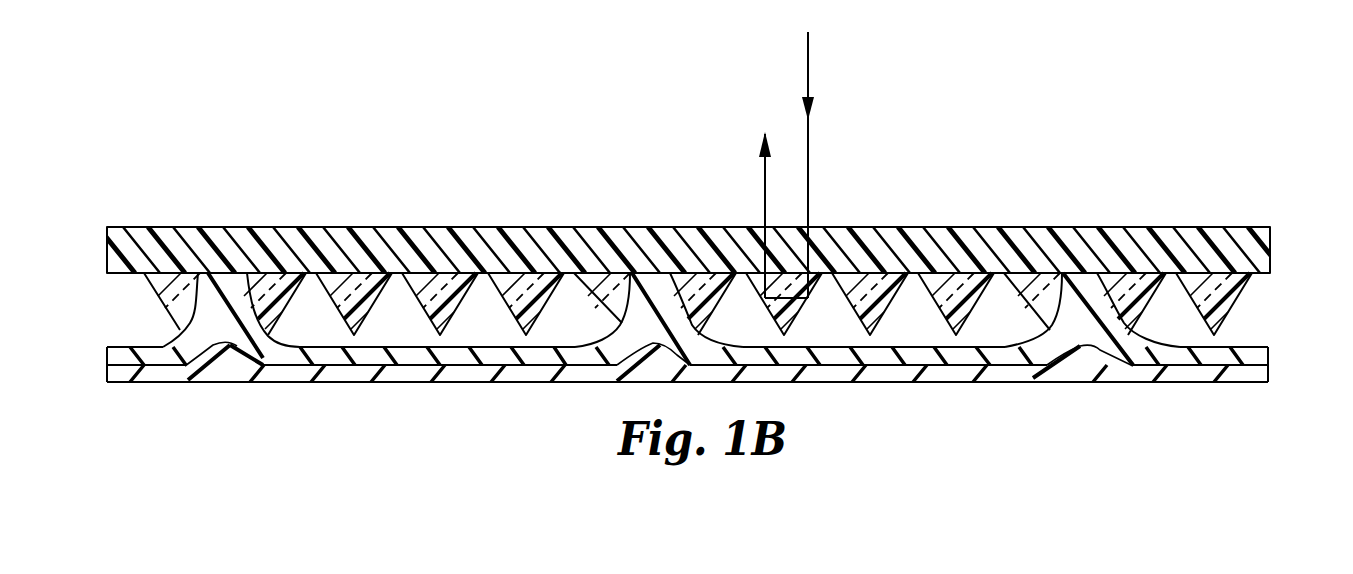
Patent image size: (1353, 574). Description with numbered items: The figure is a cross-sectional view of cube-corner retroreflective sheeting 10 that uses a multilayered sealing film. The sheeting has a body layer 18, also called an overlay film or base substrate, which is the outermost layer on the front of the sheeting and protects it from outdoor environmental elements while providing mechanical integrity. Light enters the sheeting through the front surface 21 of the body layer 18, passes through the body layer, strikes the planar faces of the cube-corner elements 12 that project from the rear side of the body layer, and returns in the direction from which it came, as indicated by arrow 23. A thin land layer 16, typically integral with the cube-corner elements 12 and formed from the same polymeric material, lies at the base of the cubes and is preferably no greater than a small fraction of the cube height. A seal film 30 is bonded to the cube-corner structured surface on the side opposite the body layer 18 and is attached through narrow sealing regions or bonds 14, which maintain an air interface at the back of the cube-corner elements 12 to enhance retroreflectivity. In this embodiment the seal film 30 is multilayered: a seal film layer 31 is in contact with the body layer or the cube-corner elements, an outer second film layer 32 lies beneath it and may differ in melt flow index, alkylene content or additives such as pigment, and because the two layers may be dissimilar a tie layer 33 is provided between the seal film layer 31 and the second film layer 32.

The cube-corner retroreflective sheeting 10 is at (1160, 170).
The cube-corner elements 12 is at (425, 312).
The bonds 14 is at (1087, 348).
The land layer 16 is at (1268, 273).
The body layer 18 is at (290, 236).
The front surface 21 is at (883, 227).
The arrow 23 is at (807, 88).
The seal film 30 is at (687, 353).
The seal film layer 31 is at (108, 353).
The second film layer 32 is at (108, 373).
The tie layer 33 is at (292, 367).